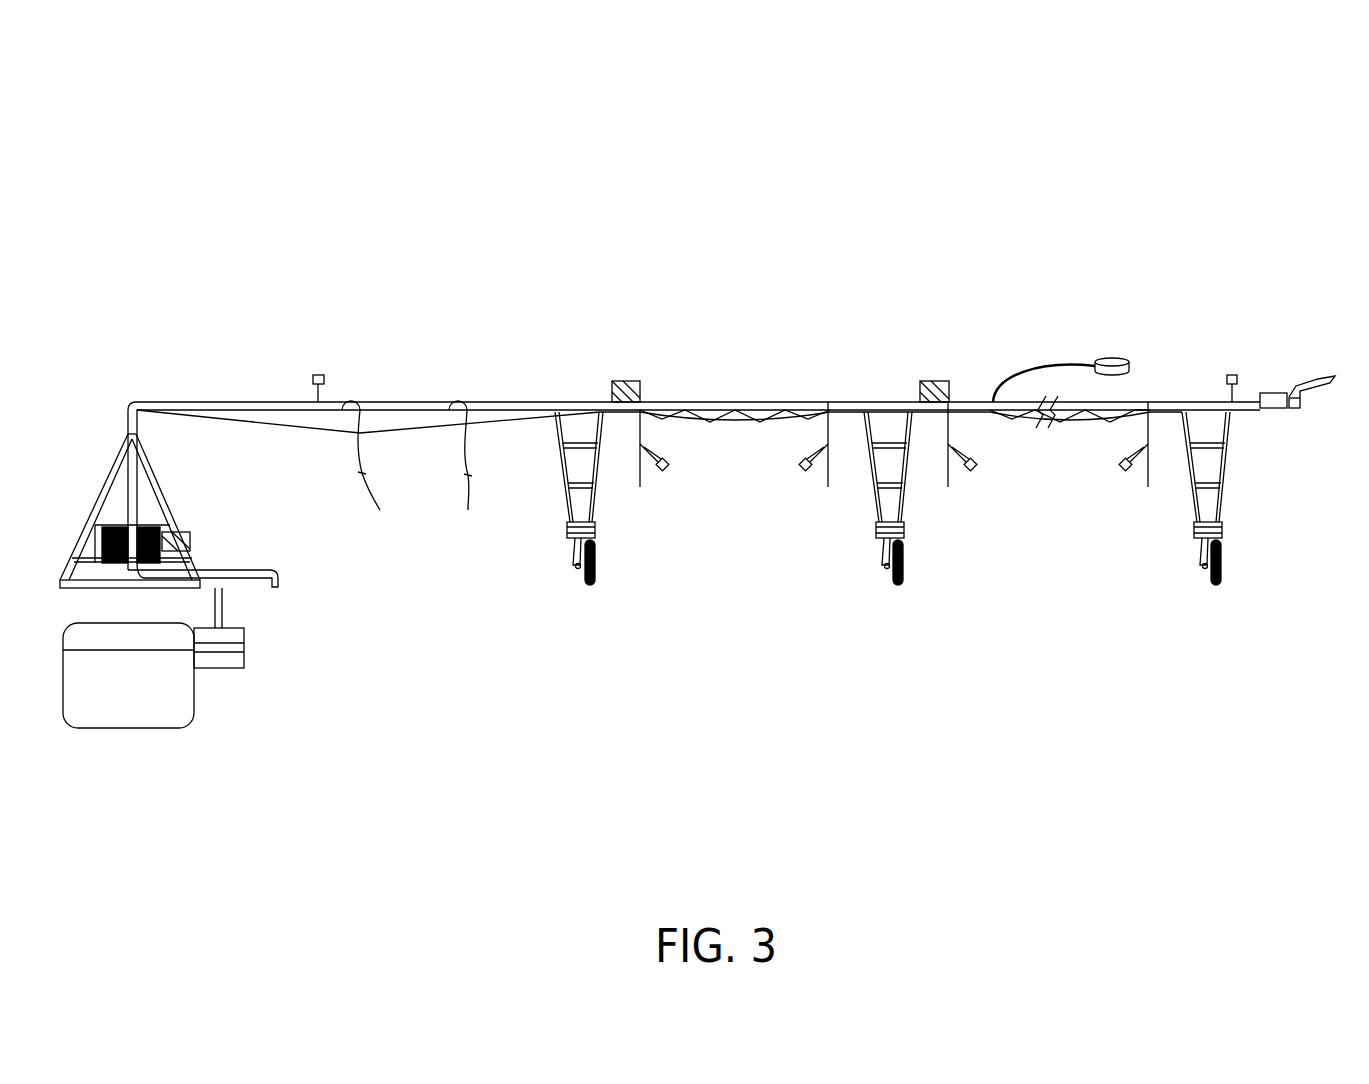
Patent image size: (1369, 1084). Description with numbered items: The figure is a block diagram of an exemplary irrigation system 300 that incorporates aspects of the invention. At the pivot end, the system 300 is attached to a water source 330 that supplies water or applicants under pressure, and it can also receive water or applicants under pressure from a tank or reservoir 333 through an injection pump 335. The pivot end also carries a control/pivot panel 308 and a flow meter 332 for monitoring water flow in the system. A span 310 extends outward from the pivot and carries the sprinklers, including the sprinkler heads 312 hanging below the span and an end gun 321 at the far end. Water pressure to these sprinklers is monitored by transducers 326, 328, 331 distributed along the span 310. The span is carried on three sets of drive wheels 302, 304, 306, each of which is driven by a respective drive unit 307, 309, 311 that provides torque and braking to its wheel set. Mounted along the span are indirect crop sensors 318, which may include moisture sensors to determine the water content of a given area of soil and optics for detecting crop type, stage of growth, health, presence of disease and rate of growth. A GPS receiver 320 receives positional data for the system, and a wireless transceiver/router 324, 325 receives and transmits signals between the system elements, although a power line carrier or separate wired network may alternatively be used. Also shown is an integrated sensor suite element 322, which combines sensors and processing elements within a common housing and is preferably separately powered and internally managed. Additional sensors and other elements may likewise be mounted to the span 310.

The irrigation system 300 is at (690, 108).
The drive wheels 302 is at (578, 566).
The drive wheels 304 is at (888, 566).
The drive wheels 306 is at (1206, 566).
The drive unit 307 is at (596, 530).
The control/pivot panel 308 is at (147, 530).
The drive unit 309 is at (904, 530).
The span 310 is at (378, 405).
The drive unit 311 is at (1222, 530).
The sprinkler heads 312 is at (468, 475).
The indirect crop sensors 318 is at (804, 466).
The GPS receiver 320 is at (1275, 393).
The end gun 321 is at (1330, 375).
The integrated sensor suite element 322 is at (1112, 358).
The wireless transceiver/router 324 is at (308, 372).
The wireless transceiver/router 325 is at (1232, 375).
The transducer 326 is at (190, 547).
The transducer 328 is at (627, 380).
The water source 330 is at (247, 572).
The transducer 331 is at (936, 380).
The flow meter 332 is at (103, 537).
The tank or reservoir 333 is at (98, 722).
The injection pump 335 is at (216, 665).